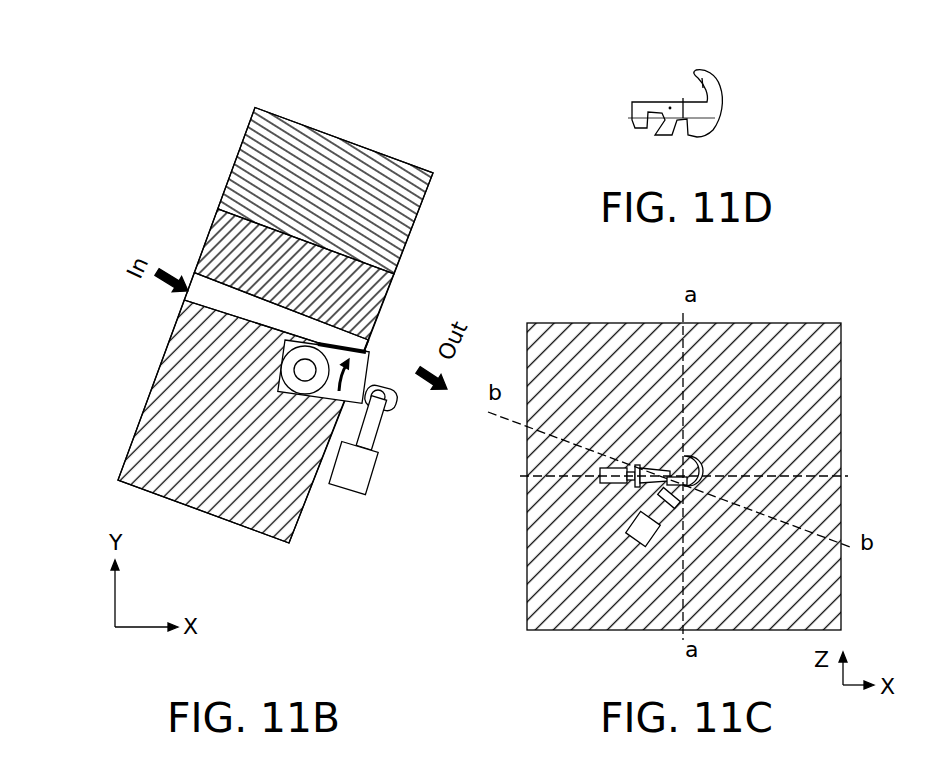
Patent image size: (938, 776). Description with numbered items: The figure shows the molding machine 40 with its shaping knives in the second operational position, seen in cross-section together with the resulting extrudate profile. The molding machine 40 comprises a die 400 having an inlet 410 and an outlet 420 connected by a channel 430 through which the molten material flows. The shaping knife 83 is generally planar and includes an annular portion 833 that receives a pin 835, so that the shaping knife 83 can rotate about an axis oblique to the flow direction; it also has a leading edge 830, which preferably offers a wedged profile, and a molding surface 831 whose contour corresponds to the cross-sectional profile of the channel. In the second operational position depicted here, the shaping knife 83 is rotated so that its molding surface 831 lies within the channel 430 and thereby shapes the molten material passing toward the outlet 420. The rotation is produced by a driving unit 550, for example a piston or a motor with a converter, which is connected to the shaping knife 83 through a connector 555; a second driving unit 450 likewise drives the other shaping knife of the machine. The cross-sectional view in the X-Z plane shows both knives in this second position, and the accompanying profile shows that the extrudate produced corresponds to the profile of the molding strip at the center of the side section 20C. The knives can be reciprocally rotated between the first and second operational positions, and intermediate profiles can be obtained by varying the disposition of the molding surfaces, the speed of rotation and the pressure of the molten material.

In FIG. 11B, the molding machine 40 is at (150, 106).
In FIG. 11C, the molding machine 40 is at (865, 293).
In FIG. 11B, the die 400 is at (241, 149).
In FIG. 11B, the inlet 410 is at (193, 279).
In FIG. 11B, the outlet 420 is at (370, 353).
In FIG. 11B, the channel 430 is at (250, 310).
In FIG. 11B, the leading edge 830 is at (287, 340).
In FIG. 11B, the molding surface 831 is at (362, 368).
In FIG. 11B, the shaping knife 83 is at (327, 393).
In FIG. 11B, the annular portion 833 is at (310, 384).
In FIG. 11B, the pin 835 is at (303, 375).
In FIG. 11B, the connector 555 is at (393, 408).
In FIG. 11B, the driving unit 550 is at (354, 494).
In FIG. 11C, the driving unit 550 is at (653, 530).
In FIG. 11C, the driving unit 450 is at (597, 490).
In FIG. 11D, the side section 20C is at (720, 70).